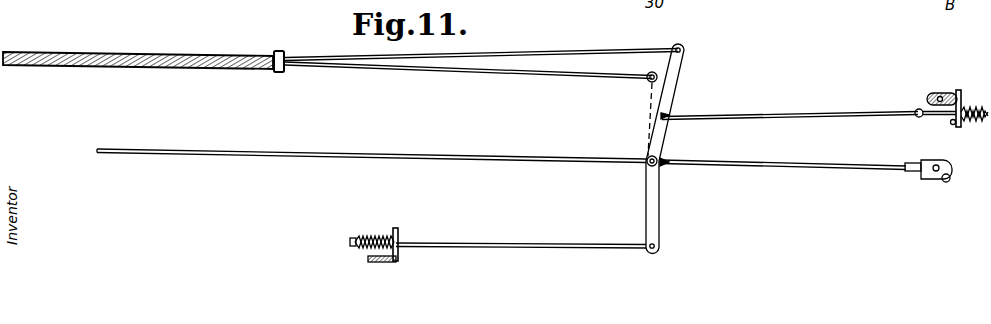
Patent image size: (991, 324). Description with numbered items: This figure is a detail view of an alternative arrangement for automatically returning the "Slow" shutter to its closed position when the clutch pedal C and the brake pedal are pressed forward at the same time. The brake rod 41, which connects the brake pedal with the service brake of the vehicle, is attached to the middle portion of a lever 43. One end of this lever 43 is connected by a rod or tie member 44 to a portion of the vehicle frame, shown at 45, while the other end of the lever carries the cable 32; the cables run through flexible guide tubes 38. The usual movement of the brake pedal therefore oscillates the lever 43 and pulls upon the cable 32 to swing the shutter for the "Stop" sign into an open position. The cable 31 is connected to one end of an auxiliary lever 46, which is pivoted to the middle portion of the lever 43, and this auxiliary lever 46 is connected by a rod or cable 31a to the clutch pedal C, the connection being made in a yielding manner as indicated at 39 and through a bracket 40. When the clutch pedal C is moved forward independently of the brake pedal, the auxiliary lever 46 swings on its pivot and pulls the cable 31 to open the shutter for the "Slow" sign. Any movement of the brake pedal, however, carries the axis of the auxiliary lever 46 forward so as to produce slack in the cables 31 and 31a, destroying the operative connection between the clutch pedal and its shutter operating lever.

The flexible guide tube 38 is at (189, 55).
The cable 31 is at (612, 46).
The cable 32 is at (552, 80).
The auxiliary lever 46 is at (680, 79).
The lever 43 is at (648, 104).
The rod or cable 31a is at (800, 114).
The yielding connection 39 is at (970, 108).
The clutch pedal C is at (940, 93).
The bracket 40 is at (951, 125).
The brake rod 41 is at (803, 163).
The rod or tie member 44 is at (550, 241).
The vehicle frame portion 45 is at (396, 234).